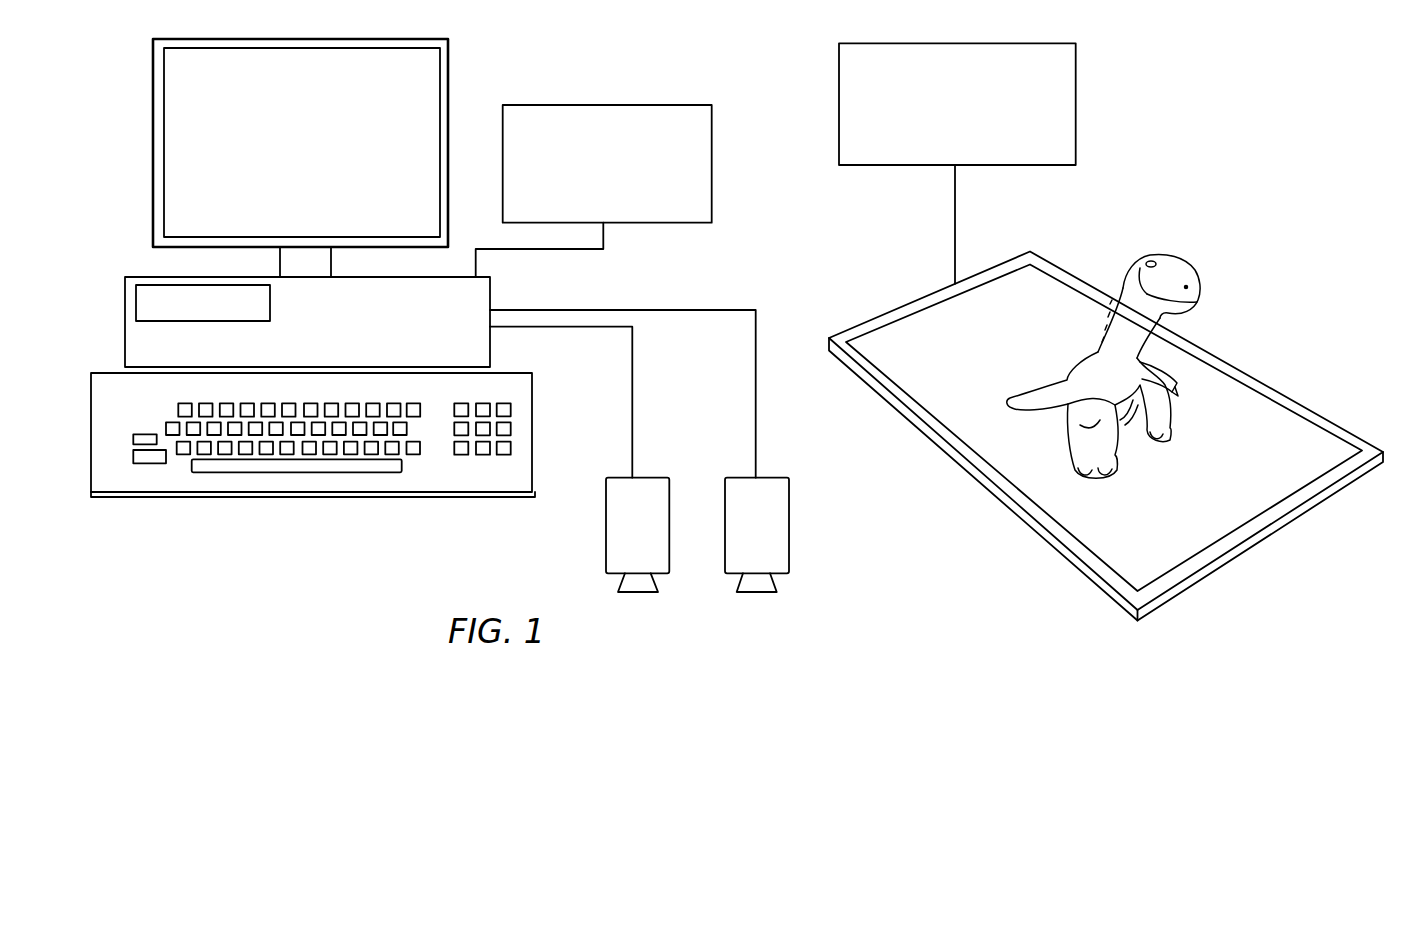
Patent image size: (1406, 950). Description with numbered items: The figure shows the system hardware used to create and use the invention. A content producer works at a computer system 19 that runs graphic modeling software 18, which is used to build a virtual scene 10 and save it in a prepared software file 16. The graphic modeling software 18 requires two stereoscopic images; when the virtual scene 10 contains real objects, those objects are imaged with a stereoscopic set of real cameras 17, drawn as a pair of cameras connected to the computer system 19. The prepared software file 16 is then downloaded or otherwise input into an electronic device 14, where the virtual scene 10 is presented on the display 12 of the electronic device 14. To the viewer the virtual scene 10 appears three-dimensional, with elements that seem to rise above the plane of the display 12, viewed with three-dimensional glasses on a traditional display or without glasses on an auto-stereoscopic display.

The virtual scene 10 is at (870, 290).
The display 12 is at (990, 445).
The electronic device 14 is at (1043, 538).
The prepared software file 16 is at (845, 123).
The real cameras 17 is at (725, 518).
The graphic modeling software 18 is at (543, 105).
The computer system 19 is at (490, 296).